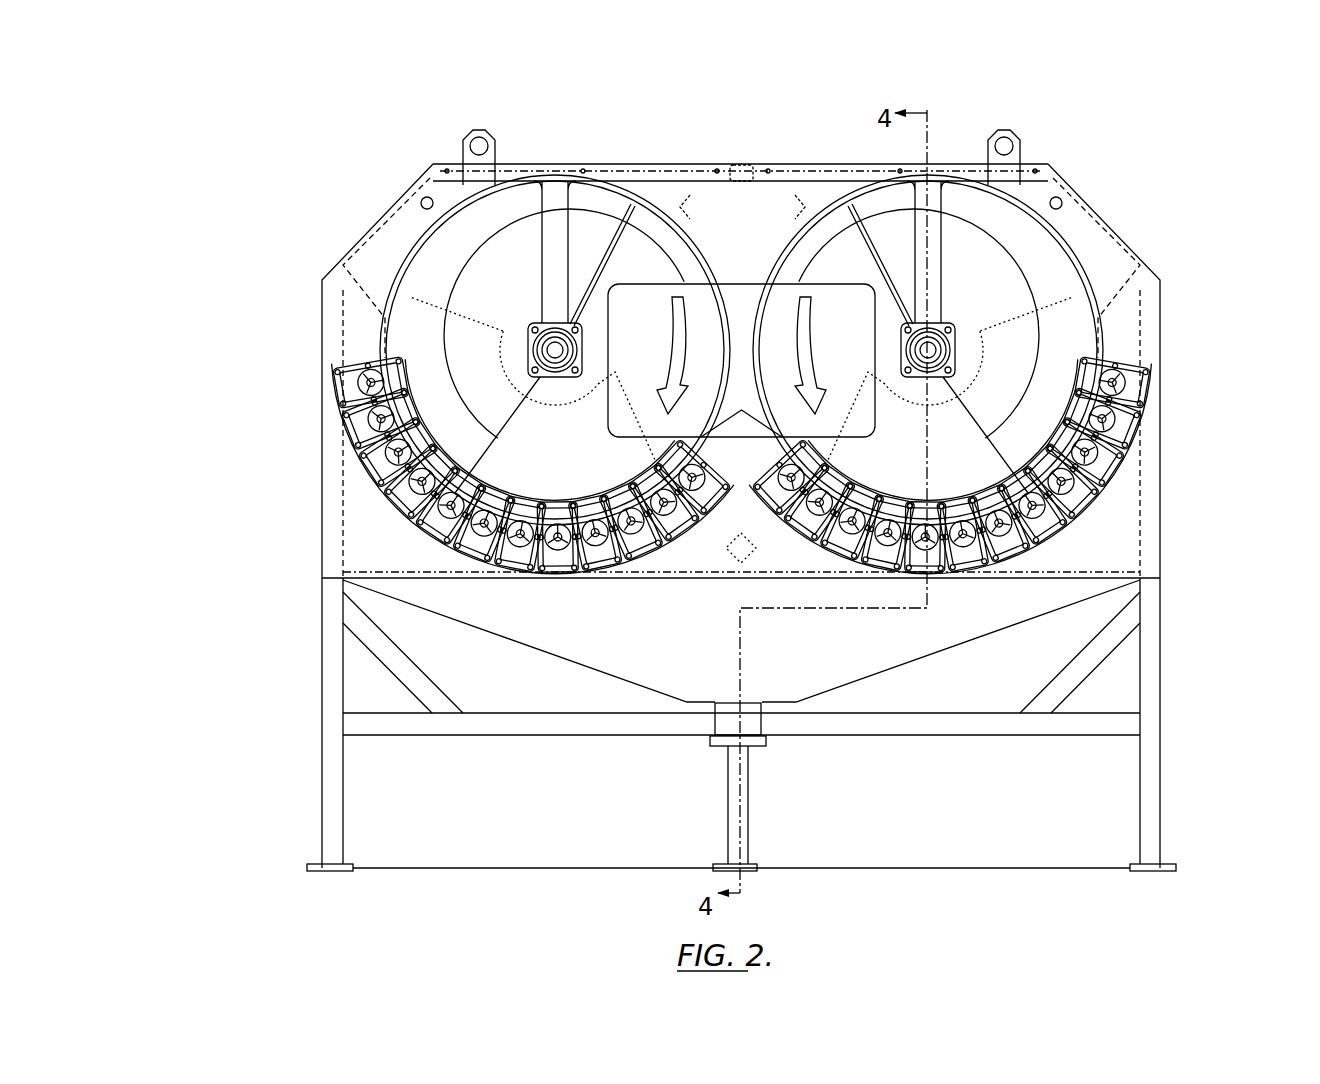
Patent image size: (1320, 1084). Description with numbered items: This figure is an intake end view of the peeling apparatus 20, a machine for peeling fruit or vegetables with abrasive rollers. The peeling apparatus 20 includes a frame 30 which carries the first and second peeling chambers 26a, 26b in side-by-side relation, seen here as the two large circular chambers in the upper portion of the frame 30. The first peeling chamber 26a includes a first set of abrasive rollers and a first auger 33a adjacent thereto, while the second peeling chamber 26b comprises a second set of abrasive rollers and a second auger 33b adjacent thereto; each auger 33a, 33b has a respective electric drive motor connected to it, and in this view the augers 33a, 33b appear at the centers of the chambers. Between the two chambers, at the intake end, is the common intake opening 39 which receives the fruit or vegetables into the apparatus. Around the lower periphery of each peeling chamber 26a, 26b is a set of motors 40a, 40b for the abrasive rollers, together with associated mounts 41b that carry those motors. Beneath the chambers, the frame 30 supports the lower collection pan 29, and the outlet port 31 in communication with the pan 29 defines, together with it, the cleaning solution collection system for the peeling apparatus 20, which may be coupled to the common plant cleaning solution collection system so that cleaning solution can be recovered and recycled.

The peeling apparatus 20 is at (1145, 142).
The first peeling chamber 26a is at (1045, 270).
The second peeling chamber 26b is at (437, 264).
The lower collection pan 29 is at (465, 622).
The frame 30 is at (1163, 770).
The outlet port 31 is at (728, 723).
The first auger 33a is at (975, 255).
The second auger 33b is at (512, 253).
The common intake opening 39 is at (743, 318).
The motors 40a is at (1100, 542).
The motors 40b is at (362, 362).
The mounts 41b is at (353, 462).